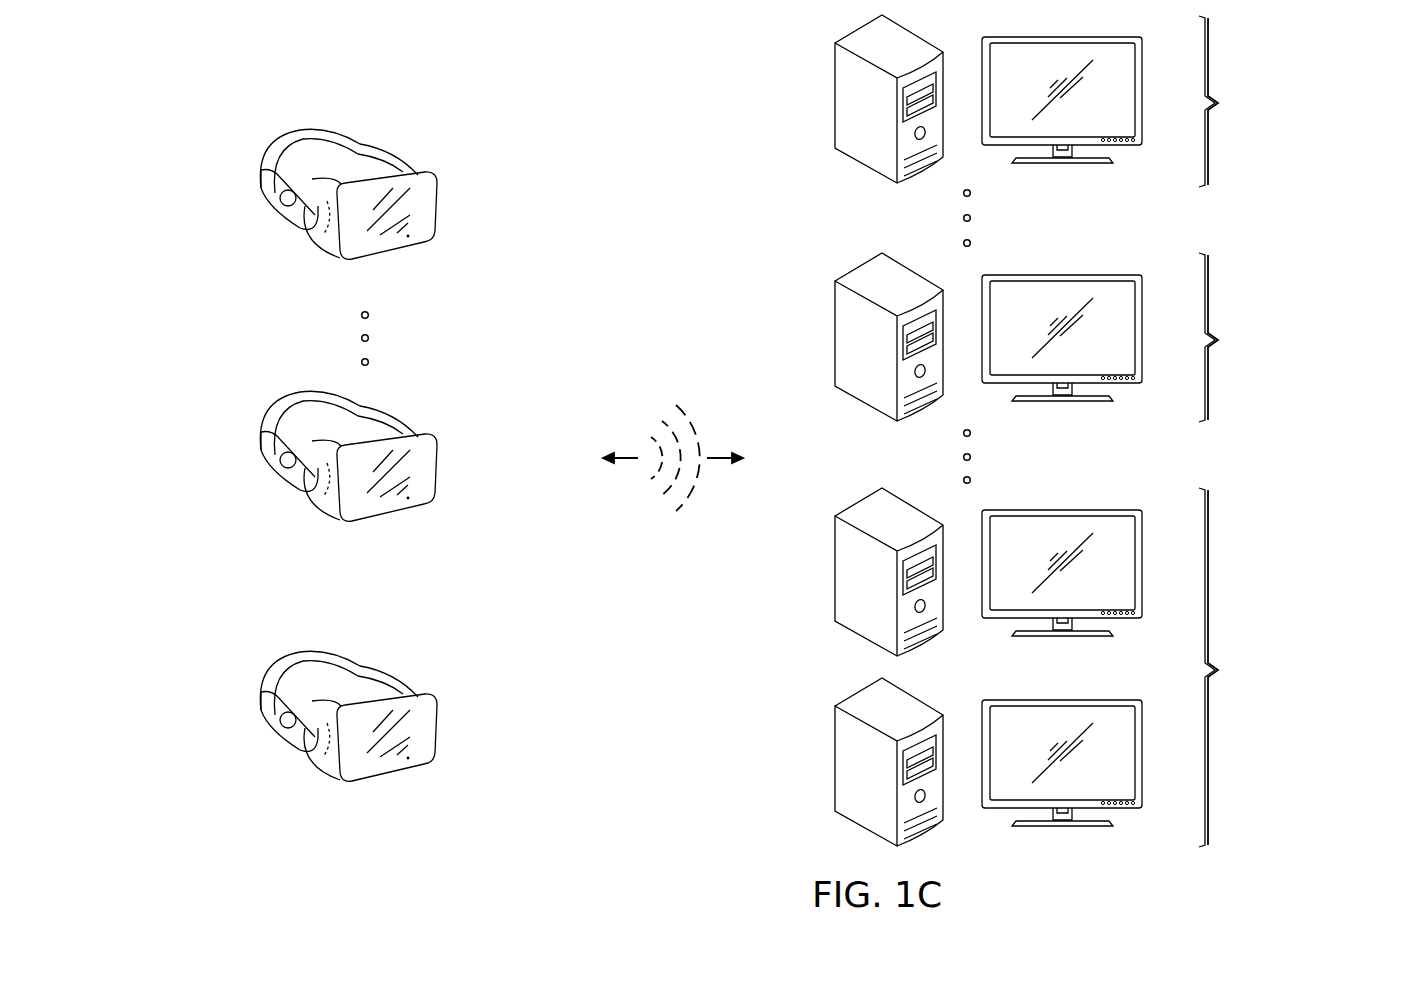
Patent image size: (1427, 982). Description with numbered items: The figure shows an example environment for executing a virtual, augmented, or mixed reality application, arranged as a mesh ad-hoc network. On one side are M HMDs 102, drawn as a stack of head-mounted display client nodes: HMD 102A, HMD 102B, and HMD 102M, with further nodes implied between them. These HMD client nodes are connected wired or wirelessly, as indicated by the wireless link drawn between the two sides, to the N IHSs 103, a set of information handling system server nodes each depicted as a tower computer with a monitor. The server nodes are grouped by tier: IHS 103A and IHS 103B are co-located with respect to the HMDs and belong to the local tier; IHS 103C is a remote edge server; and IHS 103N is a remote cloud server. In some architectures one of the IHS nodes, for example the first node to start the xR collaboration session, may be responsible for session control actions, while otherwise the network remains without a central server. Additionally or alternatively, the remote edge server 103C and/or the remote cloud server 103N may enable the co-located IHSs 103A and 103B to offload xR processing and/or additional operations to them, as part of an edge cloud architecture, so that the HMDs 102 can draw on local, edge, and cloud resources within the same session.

The HMDs 102 is at (228, 790).
The HMD client node 102M is at (438, 206).
The HMD client node 102B is at (438, 468).
The HMD client node 102A is at (438, 730).
The IHSs 103 is at (1318, 847).
The remote cloud server 103N is at (834, 96).
The remote edge server 103C is at (834, 333).
The co-located IHS 103B is at (834, 568).
The co-located IHS 103A is at (834, 758).